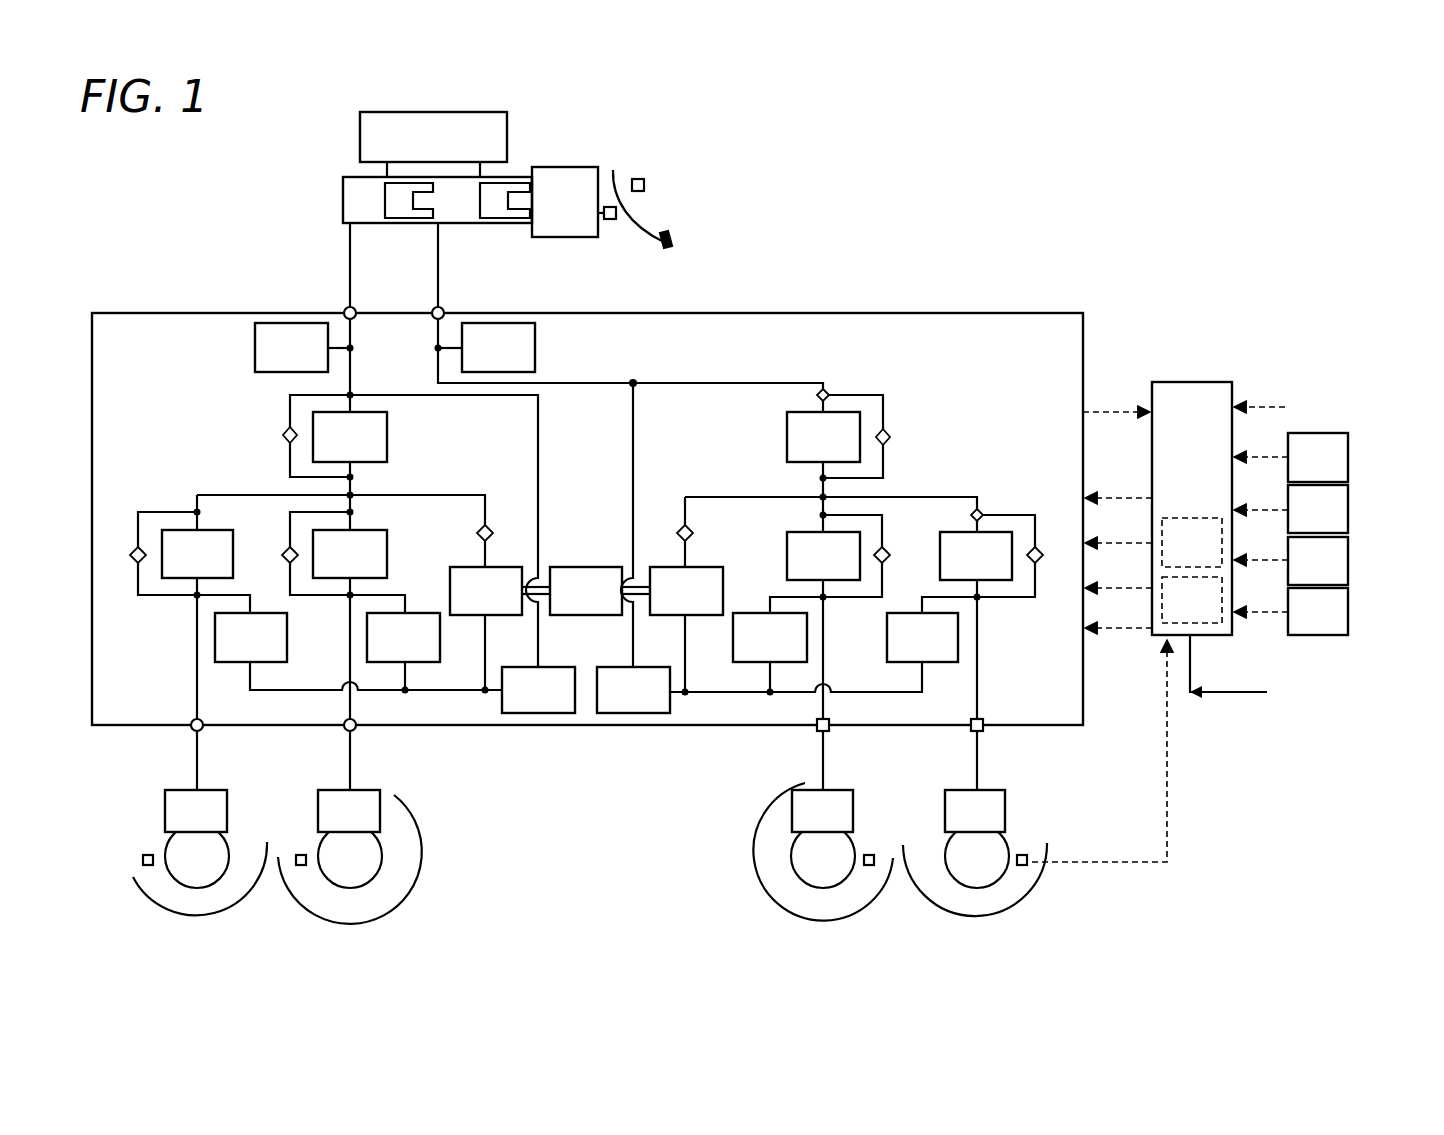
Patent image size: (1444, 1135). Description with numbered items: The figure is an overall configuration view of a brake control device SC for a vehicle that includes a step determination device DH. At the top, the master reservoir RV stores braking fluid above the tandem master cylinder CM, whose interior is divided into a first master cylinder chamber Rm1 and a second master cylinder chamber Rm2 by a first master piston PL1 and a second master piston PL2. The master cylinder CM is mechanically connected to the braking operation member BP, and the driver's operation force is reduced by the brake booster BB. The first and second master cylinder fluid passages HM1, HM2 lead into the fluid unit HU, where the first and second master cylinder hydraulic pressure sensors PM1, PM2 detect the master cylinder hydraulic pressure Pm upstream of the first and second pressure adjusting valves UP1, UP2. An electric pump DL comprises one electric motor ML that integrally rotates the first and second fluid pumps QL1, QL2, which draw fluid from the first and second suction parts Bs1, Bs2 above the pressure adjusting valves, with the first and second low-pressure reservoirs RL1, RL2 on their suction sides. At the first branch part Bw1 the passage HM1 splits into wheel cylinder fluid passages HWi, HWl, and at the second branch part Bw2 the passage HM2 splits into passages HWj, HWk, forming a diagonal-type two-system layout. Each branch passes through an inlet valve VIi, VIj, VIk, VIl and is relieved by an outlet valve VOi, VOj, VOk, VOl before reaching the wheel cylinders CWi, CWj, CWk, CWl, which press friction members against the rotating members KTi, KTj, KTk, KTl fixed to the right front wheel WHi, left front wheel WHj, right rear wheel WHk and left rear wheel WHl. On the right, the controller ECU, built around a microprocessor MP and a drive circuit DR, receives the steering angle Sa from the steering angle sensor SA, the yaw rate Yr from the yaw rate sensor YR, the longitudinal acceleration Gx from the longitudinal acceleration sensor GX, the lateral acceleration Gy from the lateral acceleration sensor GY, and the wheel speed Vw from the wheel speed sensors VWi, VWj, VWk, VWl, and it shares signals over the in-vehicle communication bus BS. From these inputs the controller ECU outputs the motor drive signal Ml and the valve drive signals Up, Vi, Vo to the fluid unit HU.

The master reservoir RV is at (433, 144).
The master cylinder CM is at (354, 177).
The first master piston PL1 is at (527, 225).
The second master piston PL2 is at (415, 225).
The first master cylinder chamber Rm1 is at (456, 222).
The second master cylinder chamber Rm2 is at (349, 228).
The brake booster BB is at (568, 202).
The braking operation member BP is at (659, 213).
The brake control device SC is at (845, 278).
The fluid unit HU is at (160, 313).
The first master cylinder fluid passage HM1 is at (720, 383).
The second master cylinder fluid passage HM2 is at (350, 338).
The first master cylinder hydraulic pressure sensor PM1 is at (485, 347).
The second master cylinder hydraulic pressure sensor PM2 is at (302, 347).
The first suction part Bs1 is at (636, 383).
The second suction part Bs2 is at (362, 396).
The first pressure adjusting valve UP1 is at (838, 433).
The second pressure adjusting valve UP2 is at (350, 437).
The first branch part Bw1 is at (815, 496).
The second branch part Bw2 is at (356, 496).
The inlet valve VIj is at (190, 607).
The inlet valve VIk is at (343, 562).
The inlet valve VIl is at (830, 564).
The inlet valve VIi is at (982, 614).
The outlet valve VOj is at (358, 651).
The outlet valve VOk is at (403, 653).
The outlet valve VOl is at (770, 654).
The outlet valve VOi is at (814, 652).
The first fluid pump QL1 is at (686, 631).
The second fluid pump QL2 is at (486, 630).
The electric motor ML is at (586, 591).
The electric pump DL is at (587, 540).
The first low-pressure reservoir RL1 is at (633, 690).
The second low-pressure reservoir RL2 is at (538, 690).
The controller ECU is at (1192, 508).
The microprocessor MP is at (1192, 542).
The drive circuit DR is at (1192, 600).
The step determination device DH is at (1192, 370).
The master cylinder hydraulic pressure Pm is at (1116, 398).
The motor drive signal Ml is at (1118, 484).
The drive signal for pressure adjusting valve Up is at (1118, 530).
The drive signal for inlet valve Vi is at (1118, 574).
The drive signal for outlet valve Vo is at (1118, 614).
The steering angle sensor SA is at (1318, 457).
The steering angle Sa is at (1261, 444).
The yaw rate sensor YR is at (1318, 509).
The yaw rate Yr is at (1261, 496).
The longitudinal acceleration sensor GX is at (1318, 561).
The longitudinal acceleration Gx is at (1261, 547).
The lateral acceleration sensor GY is at (1318, 611).
The lateral acceleration Gy is at (1261, 599).
The in-vehicle communication bus BS is at (1228, 666).
The wheel speed Vw is at (1121, 751).
The wheel cylinder fluid passage HWj is at (197, 745).
The wheel cylinder fluid passage HWk is at (350, 745).
The wheel cylinder fluid passage HWl is at (823, 745).
The wheel cylinder fluid passage HWi is at (977, 745).
The wheel cylinder CWj is at (196, 811).
The wheel cylinder CWk is at (349, 811).
The wheel cylinder CWl is at (822, 811).
The wheel cylinder CWi is at (975, 811).
The rotating member KTj is at (197, 856).
The rotating member KTk is at (350, 856).
The rotating member KTl is at (823, 856).
The rotating member KTi is at (977, 856).
The wheel speed sensor VWj is at (147, 853).
The wheel speed sensor VWk is at (300, 853).
The wheel speed sensor VWl is at (871, 853).
The wheel speed sensor VWi is at (1024, 853).
The left front wheel WHj is at (136, 880).
The right rear wheel WHk is at (412, 888).
The left rear wheel WHl is at (760, 885).
The right front wheel WHi is at (1035, 883).